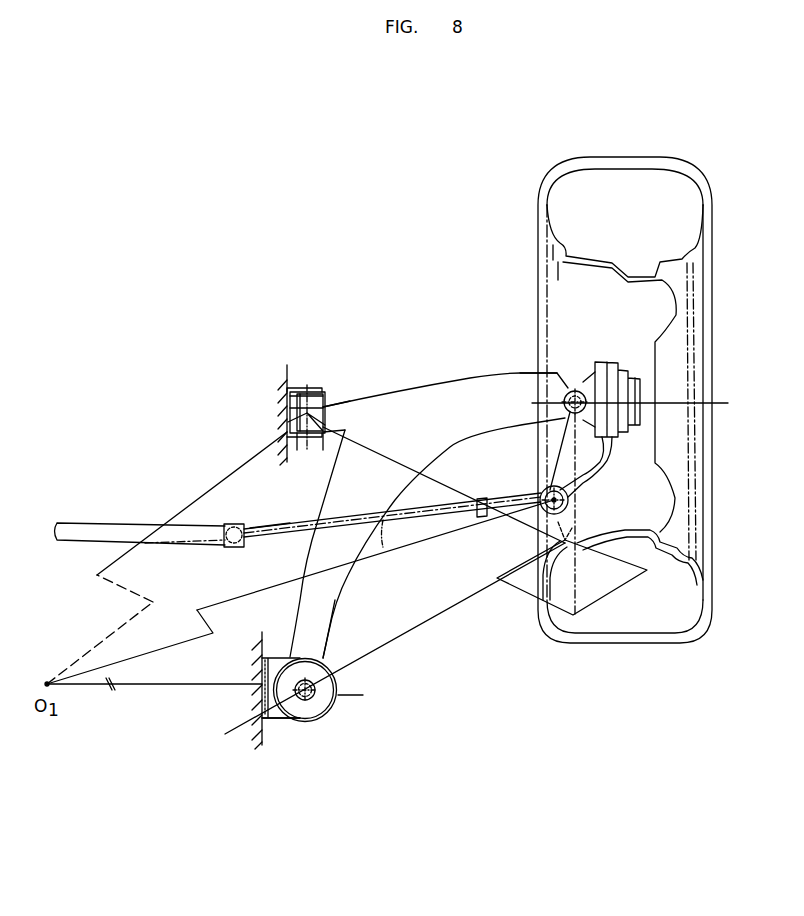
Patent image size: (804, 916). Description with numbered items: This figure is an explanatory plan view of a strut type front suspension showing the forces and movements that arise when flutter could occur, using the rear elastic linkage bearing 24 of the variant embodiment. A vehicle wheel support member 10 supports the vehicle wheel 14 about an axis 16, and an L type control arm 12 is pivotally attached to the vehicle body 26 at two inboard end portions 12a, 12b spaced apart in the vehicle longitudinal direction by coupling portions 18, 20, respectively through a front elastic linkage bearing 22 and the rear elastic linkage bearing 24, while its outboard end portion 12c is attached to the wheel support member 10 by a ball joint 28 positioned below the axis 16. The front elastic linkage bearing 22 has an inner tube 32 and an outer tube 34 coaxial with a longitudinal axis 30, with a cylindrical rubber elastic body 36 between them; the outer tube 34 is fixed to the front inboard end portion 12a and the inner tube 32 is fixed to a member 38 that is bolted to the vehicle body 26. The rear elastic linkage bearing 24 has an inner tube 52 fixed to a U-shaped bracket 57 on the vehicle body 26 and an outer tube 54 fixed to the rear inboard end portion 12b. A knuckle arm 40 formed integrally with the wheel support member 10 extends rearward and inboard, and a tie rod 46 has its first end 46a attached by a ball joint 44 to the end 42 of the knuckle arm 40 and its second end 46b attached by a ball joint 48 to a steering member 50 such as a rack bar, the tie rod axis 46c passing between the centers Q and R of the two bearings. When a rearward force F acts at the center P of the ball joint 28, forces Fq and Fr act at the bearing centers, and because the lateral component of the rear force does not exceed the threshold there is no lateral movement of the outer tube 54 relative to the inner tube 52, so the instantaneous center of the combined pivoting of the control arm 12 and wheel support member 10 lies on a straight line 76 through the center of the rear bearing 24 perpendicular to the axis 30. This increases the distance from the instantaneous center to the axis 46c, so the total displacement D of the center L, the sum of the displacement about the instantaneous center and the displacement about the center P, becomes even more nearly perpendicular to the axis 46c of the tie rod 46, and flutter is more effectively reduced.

The vehicle wheel support member 10 is at (600, 362).
The control arm 12 is at (397, 402).
The front inboard end portion 12a is at (330, 410).
The rear inboard end portion 12b is at (337, 623).
The outboard end portion 12c is at (522, 392).
The vehicle wheel 14 is at (648, 157).
The axis 16 is at (680, 402).
The coupling portion 18 is at (297, 383).
The coupling portion 20 is at (277, 722).
The front elastic linkage bearing 22 is at (322, 395).
The rear elastic linkage bearing 24 is at (328, 717).
The vehicle body 26 is at (278, 375).
The ball joint 28 is at (564, 405).
The axis 30 is at (308, 385).
The inner tube 32 is at (288, 393).
The outer tube 34 is at (332, 410).
The cylindrical rubber elastic body 36 is at (290, 407).
The member fixed to the vehicle body 38 is at (305, 438).
The knuckle arm 40 is at (608, 453).
The end of the knuckle arm 42 is at (563, 470).
The ball joint 44 is at (570, 505).
The tie rod 46 is at (400, 510).
The first end of the tie rod 46a is at (500, 493).
The second end of the tie rod 46b is at (290, 524).
The axis of the tie rod 46c is at (383, 547).
The ball joint 48 is at (234, 523).
The steering member 50 is at (125, 523).
The inner tube 52 is at (318, 662).
The outer tube 54 is at (363, 695).
The U-shaped bracket 57 is at (275, 657).
The straight line 76 is at (158, 688).